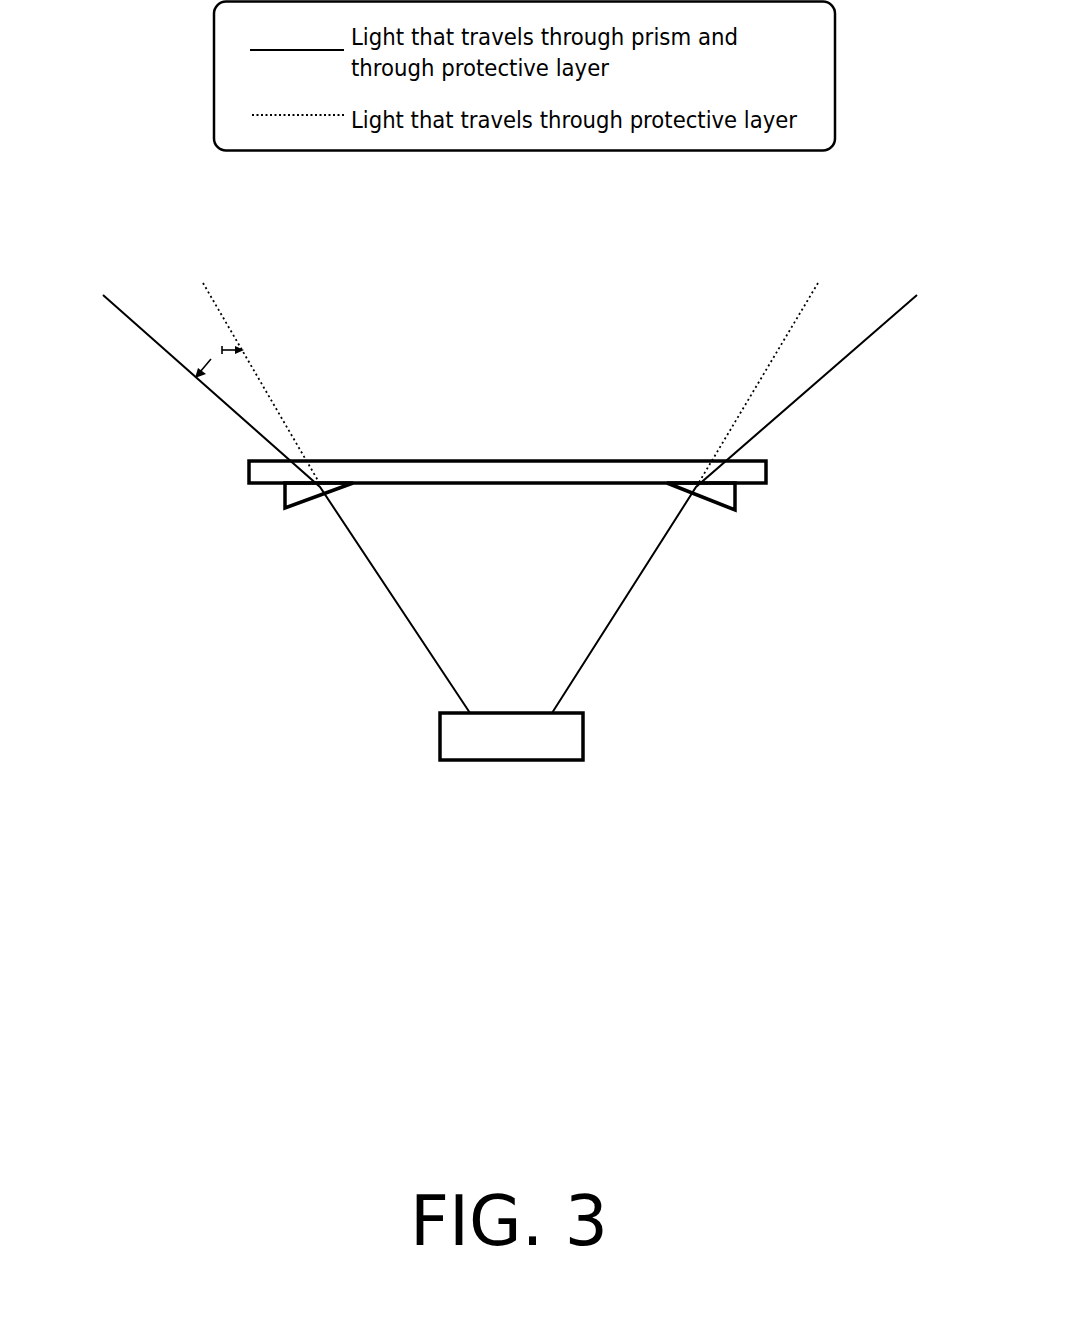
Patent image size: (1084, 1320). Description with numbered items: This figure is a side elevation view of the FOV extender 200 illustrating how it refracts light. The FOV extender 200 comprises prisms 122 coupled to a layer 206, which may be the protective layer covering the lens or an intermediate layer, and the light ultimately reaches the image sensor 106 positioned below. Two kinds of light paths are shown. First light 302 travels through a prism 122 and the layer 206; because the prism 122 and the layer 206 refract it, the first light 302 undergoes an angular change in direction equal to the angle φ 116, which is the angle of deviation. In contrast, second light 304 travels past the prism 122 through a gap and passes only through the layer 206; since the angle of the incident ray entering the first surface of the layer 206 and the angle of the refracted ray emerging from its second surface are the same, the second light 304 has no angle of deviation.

The FOV extender 200 is at (200, 521).
The first light 302 is at (130, 318).
The second light 304 is at (233, 332).
The angle φ 116 is at (229, 348).
The layer 206 is at (440, 461).
The prism 122 is at (301, 508).
The image sensor 106 is at (472, 760).